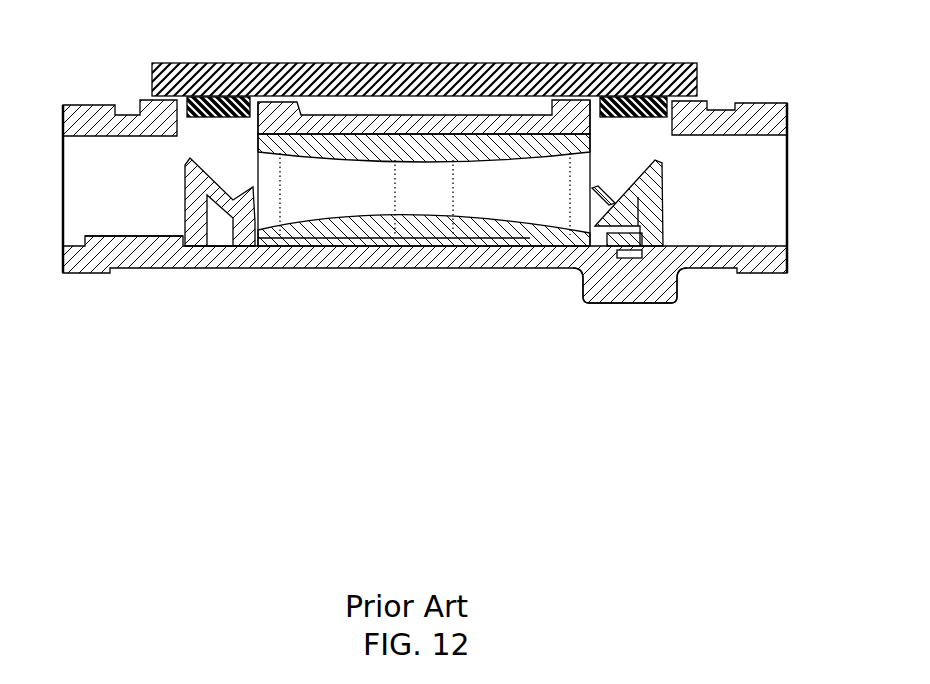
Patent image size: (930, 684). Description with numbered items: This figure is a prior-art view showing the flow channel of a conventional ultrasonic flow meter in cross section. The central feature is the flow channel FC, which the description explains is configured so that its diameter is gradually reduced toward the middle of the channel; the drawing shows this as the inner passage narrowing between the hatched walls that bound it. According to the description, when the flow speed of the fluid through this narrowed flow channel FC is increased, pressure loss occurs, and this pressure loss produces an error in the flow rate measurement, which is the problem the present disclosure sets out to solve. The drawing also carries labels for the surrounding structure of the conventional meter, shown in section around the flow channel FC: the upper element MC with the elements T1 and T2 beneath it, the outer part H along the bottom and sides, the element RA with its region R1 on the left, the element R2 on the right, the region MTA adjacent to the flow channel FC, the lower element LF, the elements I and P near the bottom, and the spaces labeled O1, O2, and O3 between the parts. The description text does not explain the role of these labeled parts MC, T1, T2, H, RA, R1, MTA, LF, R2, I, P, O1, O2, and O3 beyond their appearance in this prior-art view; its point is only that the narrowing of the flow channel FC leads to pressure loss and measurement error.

The main cover MC is at (338, 68).
The first tape T1 is at (207, 97).
The second tape T2 is at (643, 82).
The housing H is at (303, 258).
The ring adapter RA is at (193, 208).
The first recess R1 is at (223, 200).
The flow channel FC is at (424, 173).
The mounting area MTA is at (514, 158).
The lower flange LF is at (578, 262).
The second recess R2 is at (628, 197).
The insert I is at (620, 250).
The pin P is at (632, 248).
The first opening O1 is at (232, 143).
The second opening O2 is at (647, 145).
The third opening O3 is at (754, 196).